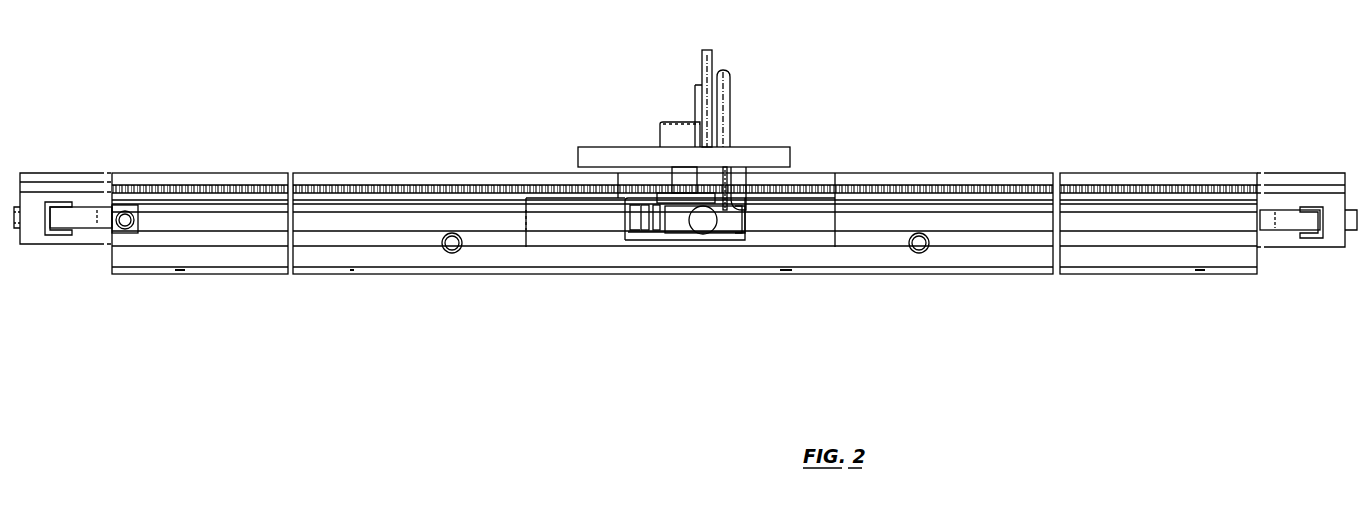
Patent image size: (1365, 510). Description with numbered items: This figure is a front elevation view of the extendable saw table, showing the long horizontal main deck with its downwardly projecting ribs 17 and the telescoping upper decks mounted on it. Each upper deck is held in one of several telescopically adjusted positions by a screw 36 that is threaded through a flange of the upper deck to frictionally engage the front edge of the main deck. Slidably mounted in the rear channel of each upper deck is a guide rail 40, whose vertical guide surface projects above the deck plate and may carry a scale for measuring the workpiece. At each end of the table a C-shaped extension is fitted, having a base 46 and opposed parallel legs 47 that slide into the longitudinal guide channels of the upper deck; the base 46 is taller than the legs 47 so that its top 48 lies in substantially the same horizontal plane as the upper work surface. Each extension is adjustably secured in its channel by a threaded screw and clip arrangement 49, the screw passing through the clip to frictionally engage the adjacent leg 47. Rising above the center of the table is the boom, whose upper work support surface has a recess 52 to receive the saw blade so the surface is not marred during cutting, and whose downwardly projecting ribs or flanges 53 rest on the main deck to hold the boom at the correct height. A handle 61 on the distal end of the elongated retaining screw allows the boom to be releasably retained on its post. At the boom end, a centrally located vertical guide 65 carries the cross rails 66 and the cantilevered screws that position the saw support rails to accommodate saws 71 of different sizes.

The downwardly projecting ribs 17 is at (808, 270).
The screw 36 is at (455, 250).
The guide rail 40 is at (340, 172).
The base 46 is at (46, 230).
The legs 47 is at (78, 228).
The top of the base 48 is at (1308, 207).
The threaded screw and clip arrangement 49 is at (127, 230).
The recess 52 is at (734, 192).
The downwardly projecting ribs or flanges 53 is at (652, 232).
The handle 61 is at (703, 226).
The vertical guides 65 is at (682, 175).
The cross rails 66 is at (778, 155).
The saws 71 is at (725, 99).